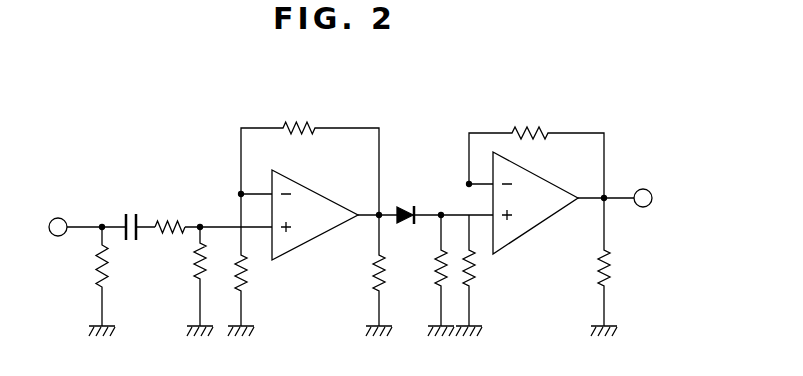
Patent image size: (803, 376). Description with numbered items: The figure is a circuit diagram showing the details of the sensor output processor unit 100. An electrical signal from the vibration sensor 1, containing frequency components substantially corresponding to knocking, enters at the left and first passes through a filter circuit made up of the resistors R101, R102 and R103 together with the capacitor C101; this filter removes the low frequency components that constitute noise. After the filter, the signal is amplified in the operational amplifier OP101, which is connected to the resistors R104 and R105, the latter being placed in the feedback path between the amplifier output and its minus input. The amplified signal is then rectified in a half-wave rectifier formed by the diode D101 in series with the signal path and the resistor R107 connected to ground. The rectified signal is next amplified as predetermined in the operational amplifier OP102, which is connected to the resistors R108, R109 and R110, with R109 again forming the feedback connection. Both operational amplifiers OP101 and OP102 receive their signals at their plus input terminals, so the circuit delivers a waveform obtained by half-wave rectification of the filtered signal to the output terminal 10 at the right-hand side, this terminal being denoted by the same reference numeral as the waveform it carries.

The sensor output processor unit 100 is at (165, 98).
The vibration sensor 1 is at (58, 217).
The output terminal 10 is at (649, 190).
The capacitor C101 is at (129, 213).
The resistor R101 is at (106, 272).
The resistor R102 is at (168, 212).
The resistor R103 is at (194, 267).
The resistor R104 is at (248, 266).
The resistor R105 is at (300, 129).
The resistor R107 is at (437, 262).
The resistor R108 is at (478, 265).
The resistor R109 is at (533, 132).
The resistor R110 is at (614, 268).
The diode D101 is at (407, 205).
The operational amplifier OP101 is at (336, 230).
The operational amplifier OP102 is at (570, 216).